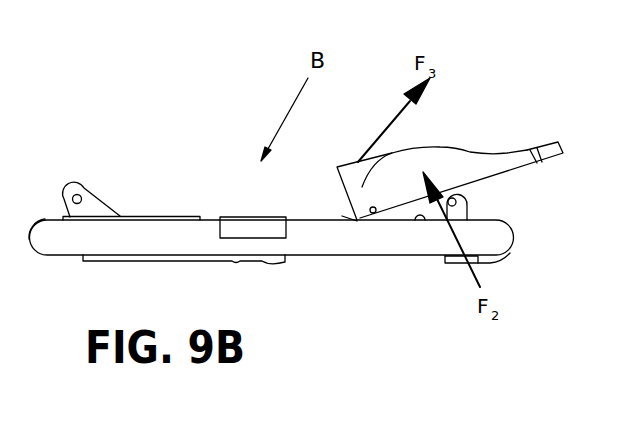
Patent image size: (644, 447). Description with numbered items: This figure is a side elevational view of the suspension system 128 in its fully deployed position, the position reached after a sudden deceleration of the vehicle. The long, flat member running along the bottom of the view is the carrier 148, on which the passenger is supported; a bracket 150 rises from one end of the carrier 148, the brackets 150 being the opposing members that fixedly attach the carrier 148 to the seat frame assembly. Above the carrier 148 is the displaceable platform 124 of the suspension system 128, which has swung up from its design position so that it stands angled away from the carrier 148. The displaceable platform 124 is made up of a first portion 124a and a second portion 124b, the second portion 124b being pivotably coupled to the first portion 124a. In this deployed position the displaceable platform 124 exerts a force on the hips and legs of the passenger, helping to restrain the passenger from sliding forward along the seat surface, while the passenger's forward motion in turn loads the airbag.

The displaceable platform 124 is at (438, 142).
The first portion 124a is at (341, 215).
The second portion 124b is at (462, 168).
The suspension system 128 is at (160, 181).
The carrier 148 is at (377, 243).
The brackets 150 is at (93, 209).